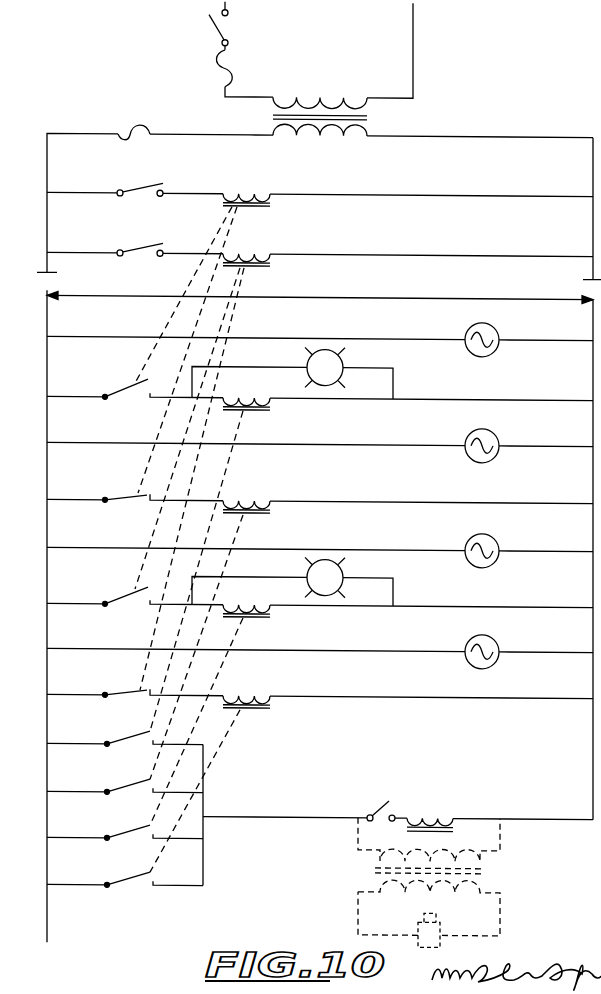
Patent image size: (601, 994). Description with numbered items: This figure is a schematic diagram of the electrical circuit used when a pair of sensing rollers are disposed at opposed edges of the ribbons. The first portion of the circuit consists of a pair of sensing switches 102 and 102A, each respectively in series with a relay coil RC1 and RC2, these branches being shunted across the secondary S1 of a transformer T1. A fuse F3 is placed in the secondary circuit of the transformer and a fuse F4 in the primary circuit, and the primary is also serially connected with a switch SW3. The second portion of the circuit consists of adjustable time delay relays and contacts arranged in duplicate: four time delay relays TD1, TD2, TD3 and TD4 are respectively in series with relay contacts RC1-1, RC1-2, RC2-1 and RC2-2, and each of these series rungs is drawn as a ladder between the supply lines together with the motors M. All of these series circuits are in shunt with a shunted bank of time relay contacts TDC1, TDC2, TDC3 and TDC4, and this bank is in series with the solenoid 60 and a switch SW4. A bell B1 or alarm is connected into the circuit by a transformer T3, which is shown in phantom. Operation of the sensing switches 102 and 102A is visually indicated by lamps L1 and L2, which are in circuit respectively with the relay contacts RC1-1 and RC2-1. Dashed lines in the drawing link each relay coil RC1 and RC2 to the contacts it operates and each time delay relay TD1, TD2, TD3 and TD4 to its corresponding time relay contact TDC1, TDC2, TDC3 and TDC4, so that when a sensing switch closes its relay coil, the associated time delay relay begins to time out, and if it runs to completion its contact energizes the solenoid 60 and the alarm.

The switch SW3 is at (228, 26).
The fuse F4 is at (229, 70).
The transformer T1 is at (431, 128).
The secondary S1 is at (333, 133).
The fuse F3 is at (139, 139).
The sensing switch 102 is at (131, 183).
The sensing switch 102A is at (135, 242).
The relay coil RC1 is at (250, 191).
The relay coil RC2 is at (250, 251).
The motor M is at (492, 322).
The relay contact RC1-1 is at (129, 386).
The lamp L1 is at (342, 358).
The time delay relay TD1 is at (243, 395).
The relay contact RC1-2 is at (130, 494).
The time delay relay TD2 is at (248, 498).
The relay contact RC2-1 is at (128, 596).
The lamp L2 is at (342, 568).
The time delay relay TD3 is at (243, 602).
The relay contact RC2-2 is at (130, 689).
The time delay relay TD4 is at (248, 693).
The time relay contact TDC1 is at (122, 739).
The time relay contact TDC2 is at (122, 787).
The time relay contact TDC3 is at (122, 833).
The time relay contact TDC4 is at (122, 880).
The switch SW4 is at (375, 810).
The solenoid 60 is at (428, 814).
The transformer T3 is at (520, 873).
The bell B1 is at (439, 940).